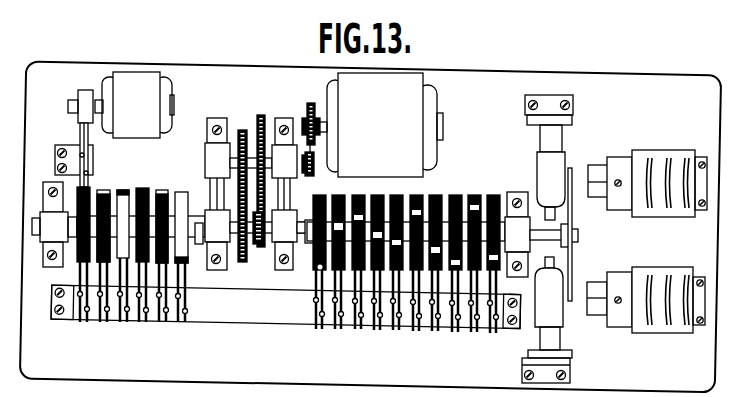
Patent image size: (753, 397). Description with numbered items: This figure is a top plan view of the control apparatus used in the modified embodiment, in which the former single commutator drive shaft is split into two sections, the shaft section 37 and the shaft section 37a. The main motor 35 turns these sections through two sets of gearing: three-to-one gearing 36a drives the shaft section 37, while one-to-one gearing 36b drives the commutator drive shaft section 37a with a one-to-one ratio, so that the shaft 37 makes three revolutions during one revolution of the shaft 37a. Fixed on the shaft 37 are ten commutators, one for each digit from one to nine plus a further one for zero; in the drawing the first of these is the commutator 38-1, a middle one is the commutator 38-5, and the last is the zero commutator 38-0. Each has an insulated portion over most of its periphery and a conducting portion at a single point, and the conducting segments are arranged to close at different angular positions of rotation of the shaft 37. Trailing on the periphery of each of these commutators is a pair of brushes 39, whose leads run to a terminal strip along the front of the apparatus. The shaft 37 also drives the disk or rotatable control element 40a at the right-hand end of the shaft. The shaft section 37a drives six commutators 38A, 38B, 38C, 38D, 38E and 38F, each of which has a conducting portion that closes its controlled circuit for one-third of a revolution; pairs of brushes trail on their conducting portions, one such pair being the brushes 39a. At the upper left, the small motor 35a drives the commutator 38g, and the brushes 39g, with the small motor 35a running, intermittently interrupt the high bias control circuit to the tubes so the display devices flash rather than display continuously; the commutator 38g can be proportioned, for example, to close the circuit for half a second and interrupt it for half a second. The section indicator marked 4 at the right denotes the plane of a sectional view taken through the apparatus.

The motor 35 is at (412, 103).
The small motor 35a is at (143, 83).
The three-to-one gearing 36a is at (262, 114).
The one-to-one gearing 36b is at (243, 128).
The shaft section 37 is at (300, 262).
The commutator drive shaft section 37a is at (193, 233).
The commutator 38g is at (78, 92).
The brushes 39g is at (80, 130).
The commutator 38A is at (92, 188).
The commutator 38B is at (103, 189).
The commutator 38C is at (120, 191).
The commutator 38D is at (150, 188).
The commutator 38E is at (158, 190).
The commutator 38F is at (166, 192).
The commutator 38-1 is at (322, 196).
The commutator 38-5 is at (401, 197).
The commutator 38-0 is at (495, 195).
The rotatable control element 40a is at (573, 259).
The brushes 39 is at (401, 330).
The brushes 39a is at (100, 322).
The section line 4- 4 is at (528, 330).